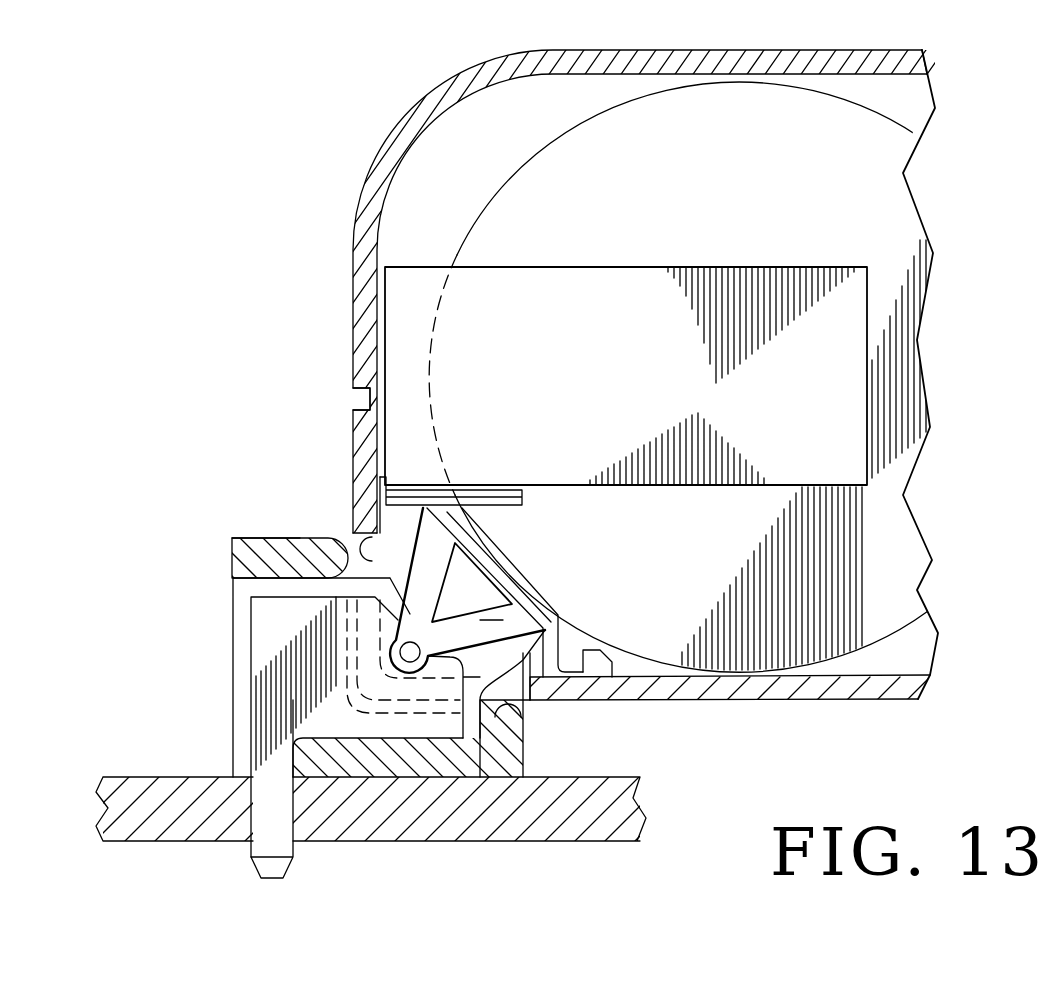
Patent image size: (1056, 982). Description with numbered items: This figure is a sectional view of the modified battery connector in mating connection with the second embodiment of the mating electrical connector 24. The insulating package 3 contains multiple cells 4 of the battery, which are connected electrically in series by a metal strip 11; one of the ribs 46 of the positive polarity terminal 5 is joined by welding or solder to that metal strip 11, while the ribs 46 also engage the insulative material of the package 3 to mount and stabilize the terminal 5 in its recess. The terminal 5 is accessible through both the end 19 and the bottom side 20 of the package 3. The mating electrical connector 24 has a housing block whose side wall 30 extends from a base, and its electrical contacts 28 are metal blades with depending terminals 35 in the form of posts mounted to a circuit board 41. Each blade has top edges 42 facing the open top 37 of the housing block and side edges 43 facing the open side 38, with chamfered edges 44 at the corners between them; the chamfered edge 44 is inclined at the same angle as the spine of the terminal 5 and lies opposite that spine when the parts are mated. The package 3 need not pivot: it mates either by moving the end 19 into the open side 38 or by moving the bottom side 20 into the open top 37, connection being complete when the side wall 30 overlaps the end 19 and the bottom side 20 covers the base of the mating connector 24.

The insulating package 3 is at (425, 97).
The cells 4 is at (745, 173).
The positive polarity terminal 5 is at (503, 620).
The metal strip 11 is at (694, 365).
The end of the package 19 is at (352, 398).
The bottom side of the package 20 is at (818, 702).
The mating electrical connector 24 is at (247, 528).
The electrical contacts 28 is at (270, 645).
The side wall 30 is at (232, 552).
The depending terminals 35 is at (267, 843).
The open top 37 is at (357, 540).
The open side 38 is at (528, 722).
The circuit board 41 is at (103, 777).
The top edges 42 is at (380, 558).
The side edges 43 is at (560, 643).
The chamfered edges 44 is at (380, 593).
The ribs 46 is at (402, 490).